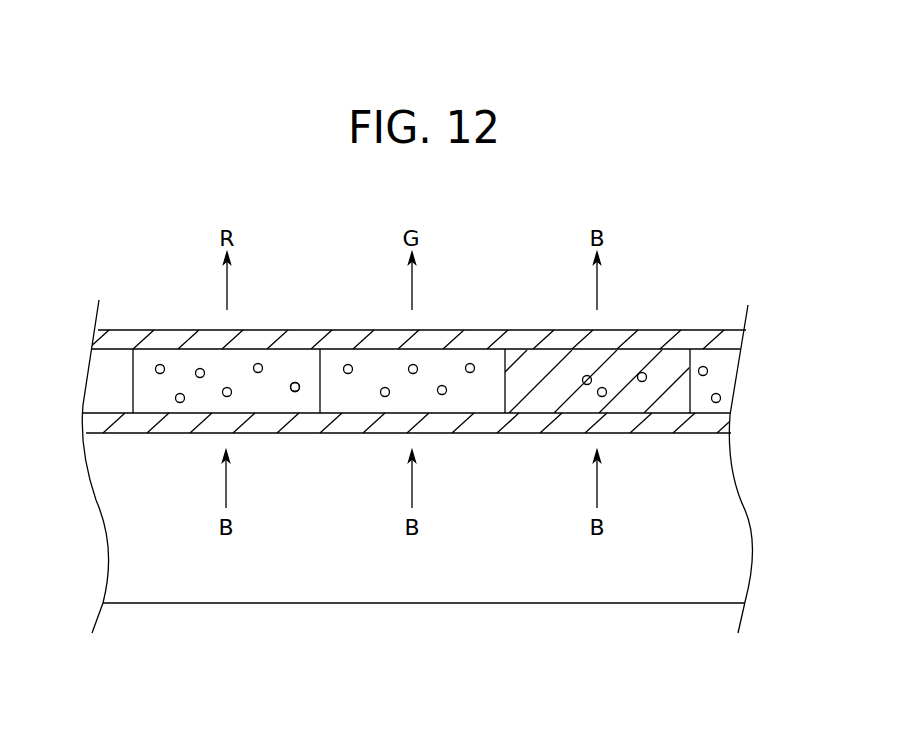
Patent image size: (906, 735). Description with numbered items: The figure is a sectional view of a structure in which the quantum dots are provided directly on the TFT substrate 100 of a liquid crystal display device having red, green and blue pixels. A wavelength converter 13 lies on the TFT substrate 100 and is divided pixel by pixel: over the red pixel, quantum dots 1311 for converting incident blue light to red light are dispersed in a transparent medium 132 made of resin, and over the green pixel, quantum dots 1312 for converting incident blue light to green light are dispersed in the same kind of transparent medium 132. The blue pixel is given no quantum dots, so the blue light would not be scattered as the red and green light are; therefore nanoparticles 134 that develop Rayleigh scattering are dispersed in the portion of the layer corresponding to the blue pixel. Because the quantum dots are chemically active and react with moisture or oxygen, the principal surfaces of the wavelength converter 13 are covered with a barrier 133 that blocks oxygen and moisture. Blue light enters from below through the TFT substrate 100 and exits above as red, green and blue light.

The wavelength converter 13 is at (132, 289).
The TFT substrate 100 is at (627, 582).
The transparent medium 132 is at (457, 363).
The barrier 133 is at (480, 425).
The nanoparticles 134 is at (605, 396).
The quantum dots 1311 is at (296, 392).
The quantum dots 1312 is at (348, 364).